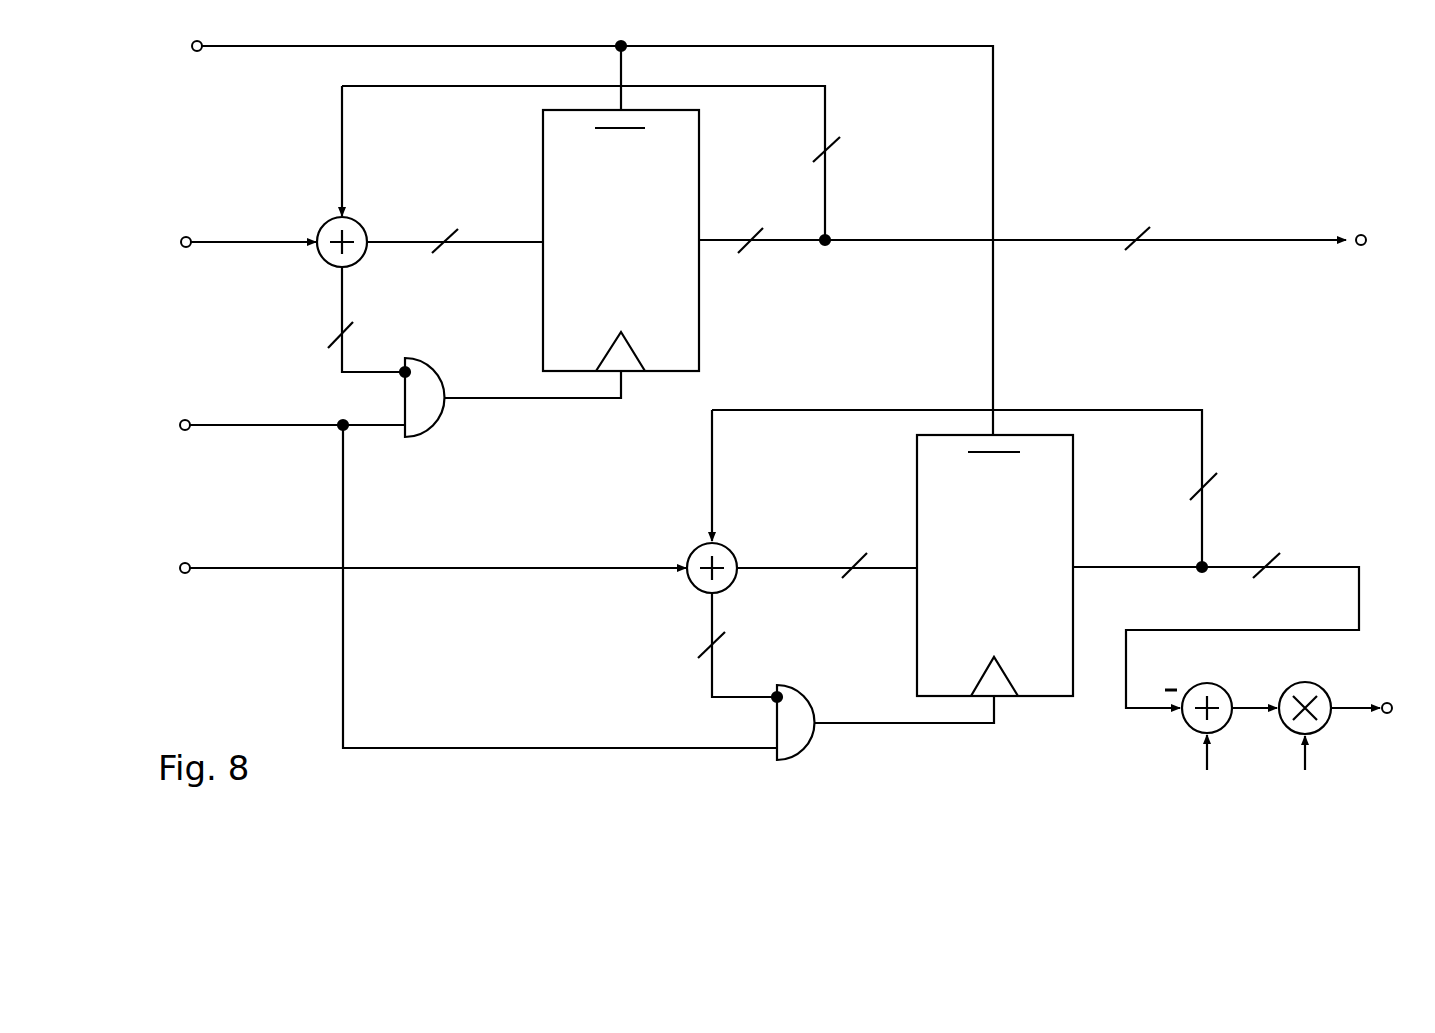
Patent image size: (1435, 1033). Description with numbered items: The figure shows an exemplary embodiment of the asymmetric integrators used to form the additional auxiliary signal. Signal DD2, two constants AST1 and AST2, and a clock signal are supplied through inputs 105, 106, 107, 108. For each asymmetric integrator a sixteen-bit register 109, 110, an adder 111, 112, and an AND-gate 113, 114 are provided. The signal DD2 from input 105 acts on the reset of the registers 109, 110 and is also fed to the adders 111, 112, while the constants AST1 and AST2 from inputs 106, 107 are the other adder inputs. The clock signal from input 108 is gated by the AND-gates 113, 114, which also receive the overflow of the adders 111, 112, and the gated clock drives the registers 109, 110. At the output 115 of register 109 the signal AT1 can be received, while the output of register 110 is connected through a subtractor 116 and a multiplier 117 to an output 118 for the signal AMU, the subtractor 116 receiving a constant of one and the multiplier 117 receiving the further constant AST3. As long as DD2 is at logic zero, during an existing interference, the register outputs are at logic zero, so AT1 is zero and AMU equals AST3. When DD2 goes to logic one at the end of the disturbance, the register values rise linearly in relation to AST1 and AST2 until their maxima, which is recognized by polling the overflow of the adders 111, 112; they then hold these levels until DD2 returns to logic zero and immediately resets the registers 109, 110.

The input 105 is at (565, 235).
The input 106 is at (220, 254).
The input 107 is at (404, 580).
The input 108 is at (449, 581).
The 16-bit register 109 is at (591, 228).
The 16-bit register 110 is at (1035, 559).
The adder 111 is at (389, 229).
The adder 112 is at (796, 553).
The AND-gate 113 is at (510, 405).
The AND-gate 114 is at (883, 726).
The output 115 is at (1095, 241).
The subtractor 116 is at (1221, 722).
The multiplier 117 is at (1302, 722).
The output 118 is at (1364, 701).